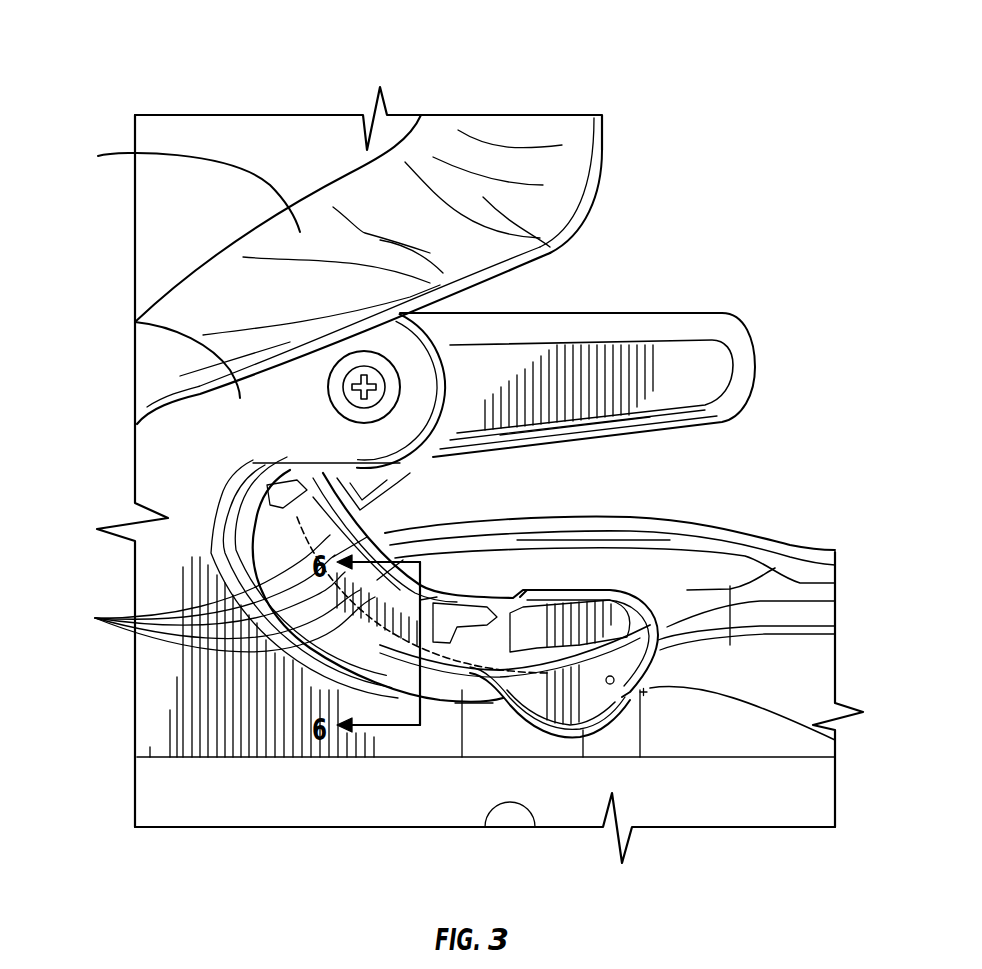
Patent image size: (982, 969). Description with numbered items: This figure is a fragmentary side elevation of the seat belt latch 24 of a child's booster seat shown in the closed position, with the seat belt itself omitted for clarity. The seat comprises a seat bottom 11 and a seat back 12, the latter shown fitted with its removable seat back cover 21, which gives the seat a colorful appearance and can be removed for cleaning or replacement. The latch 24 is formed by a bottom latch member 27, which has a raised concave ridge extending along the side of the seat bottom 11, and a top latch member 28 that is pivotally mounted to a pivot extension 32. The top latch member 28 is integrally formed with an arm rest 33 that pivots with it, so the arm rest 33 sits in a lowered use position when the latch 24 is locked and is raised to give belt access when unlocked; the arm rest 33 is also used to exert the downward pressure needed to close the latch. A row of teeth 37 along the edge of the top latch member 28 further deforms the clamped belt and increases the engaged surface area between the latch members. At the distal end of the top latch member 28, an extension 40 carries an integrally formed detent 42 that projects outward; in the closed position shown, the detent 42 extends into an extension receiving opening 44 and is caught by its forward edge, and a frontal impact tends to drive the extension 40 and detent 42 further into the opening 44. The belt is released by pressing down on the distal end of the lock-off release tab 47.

The seat bottom 11 is at (138, 745).
The seat back 12 is at (252, 140).
The seat back cover 21 is at (108, 155).
The latch 24 is at (783, 407).
The bottom latch member 27 is at (462, 688).
The top latch member 28 is at (458, 598).
The pivot extension 32 is at (135, 322).
The arm rest 33 is at (695, 355).
The teeth 37 is at (221, 593).
The extension 40 is at (835, 603).
The detent 42 is at (637, 693).
The extension receiving opening 44 is at (650, 688).
The lock-off release tab 47 is at (577, 737).